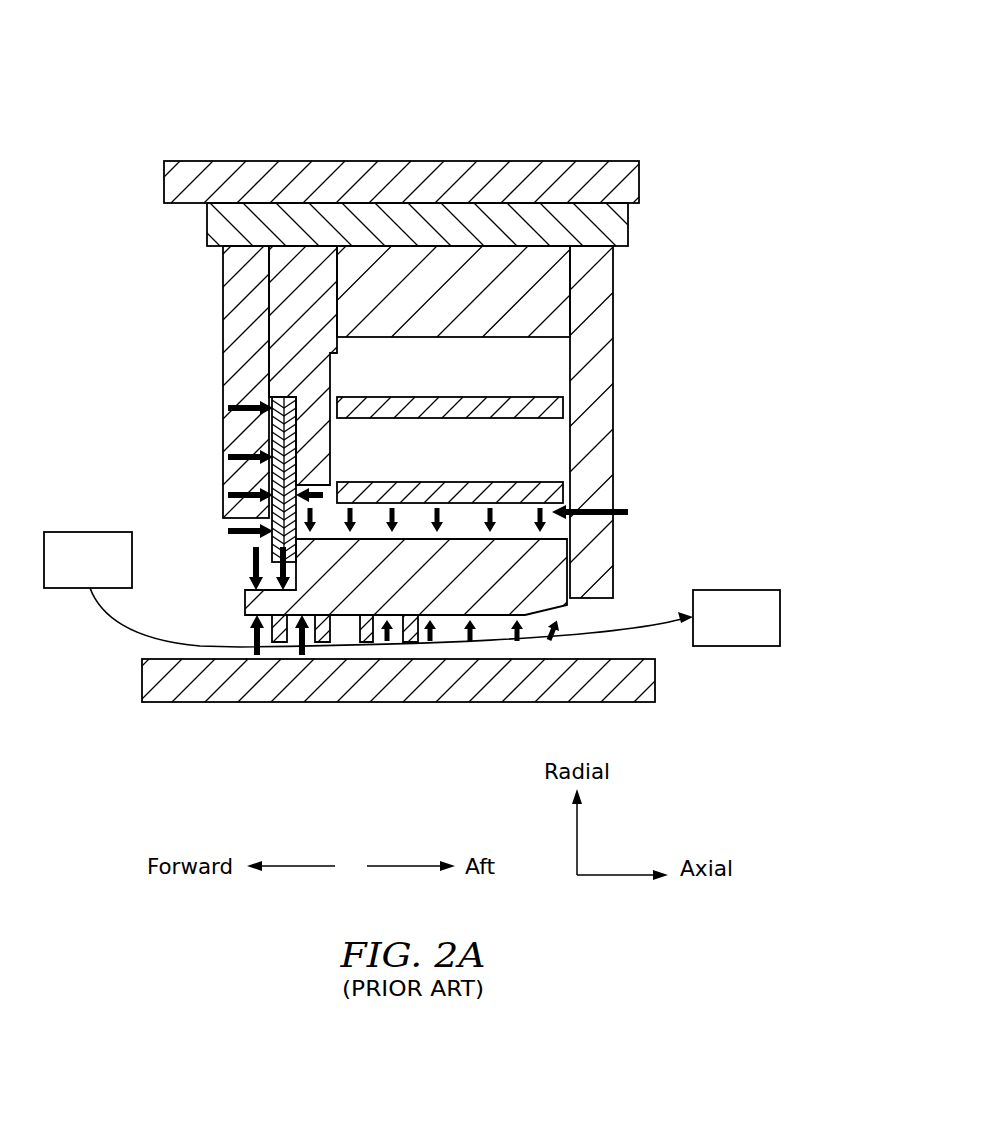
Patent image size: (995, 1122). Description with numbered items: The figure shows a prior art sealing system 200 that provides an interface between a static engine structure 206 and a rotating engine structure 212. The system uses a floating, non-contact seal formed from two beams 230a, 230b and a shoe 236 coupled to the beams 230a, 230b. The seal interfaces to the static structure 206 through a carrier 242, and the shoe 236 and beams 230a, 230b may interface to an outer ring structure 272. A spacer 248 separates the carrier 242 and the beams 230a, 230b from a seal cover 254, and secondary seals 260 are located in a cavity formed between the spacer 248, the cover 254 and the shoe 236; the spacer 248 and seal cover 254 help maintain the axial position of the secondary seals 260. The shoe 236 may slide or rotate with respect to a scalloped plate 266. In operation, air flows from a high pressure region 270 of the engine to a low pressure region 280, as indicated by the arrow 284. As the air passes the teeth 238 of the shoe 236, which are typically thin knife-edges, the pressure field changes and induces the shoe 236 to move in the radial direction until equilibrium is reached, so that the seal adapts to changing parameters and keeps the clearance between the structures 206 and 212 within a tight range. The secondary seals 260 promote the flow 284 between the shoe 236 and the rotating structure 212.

The sealing system 200 is at (630, 66).
The static engine structure 206 is at (633, 180).
The carrier 242 is at (608, 228).
The outer ring structure 272 is at (448, 268).
The spacer 248 is at (294, 270).
The seal cover 254 is at (243, 357).
The secondary seals 260 is at (280, 478).
The scalloped plate 266 is at (608, 352).
The beam 230a is at (547, 398).
The beam 230b is at (535, 493).
The shoe 236 is at (548, 560).
The teeth 238 is at (323, 638).
The rotating engine structure 212 is at (648, 682).
The high pressure region 270 is at (64, 575).
The low pressure region 280 is at (713, 632).
The arrow 284 is at (115, 620).